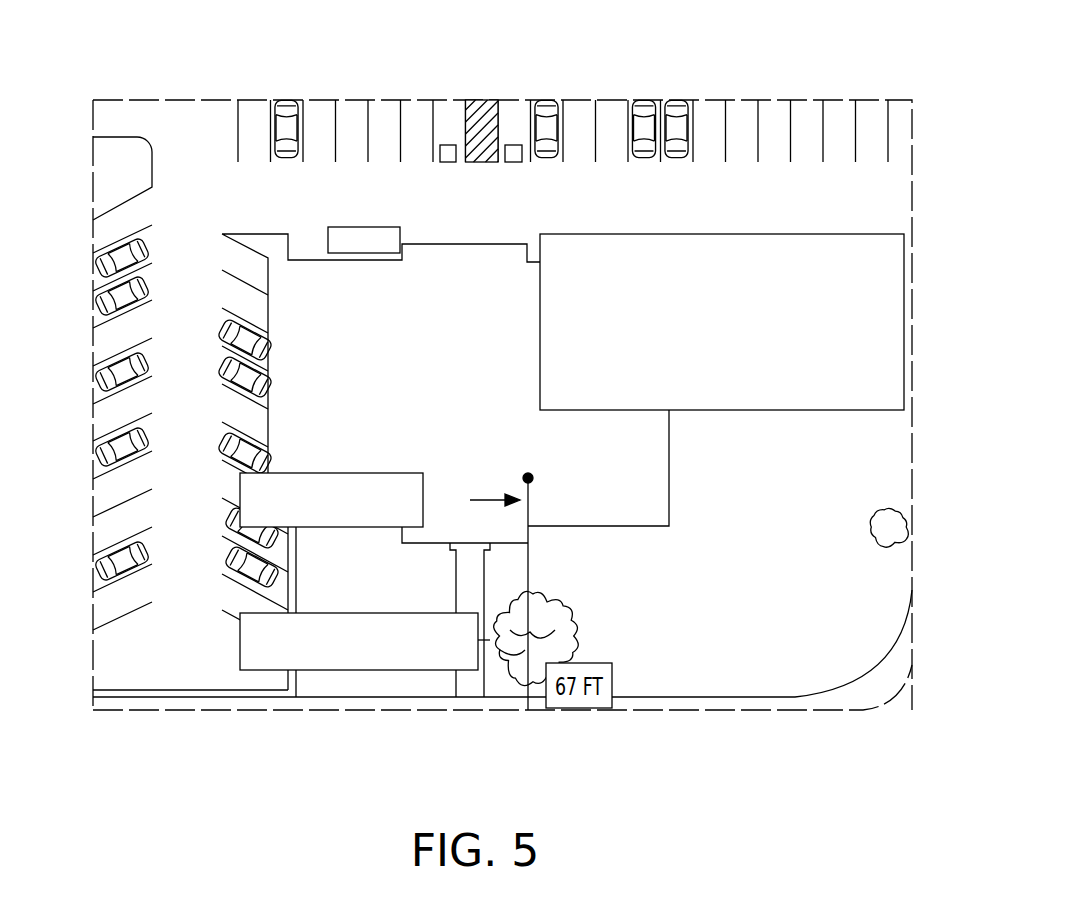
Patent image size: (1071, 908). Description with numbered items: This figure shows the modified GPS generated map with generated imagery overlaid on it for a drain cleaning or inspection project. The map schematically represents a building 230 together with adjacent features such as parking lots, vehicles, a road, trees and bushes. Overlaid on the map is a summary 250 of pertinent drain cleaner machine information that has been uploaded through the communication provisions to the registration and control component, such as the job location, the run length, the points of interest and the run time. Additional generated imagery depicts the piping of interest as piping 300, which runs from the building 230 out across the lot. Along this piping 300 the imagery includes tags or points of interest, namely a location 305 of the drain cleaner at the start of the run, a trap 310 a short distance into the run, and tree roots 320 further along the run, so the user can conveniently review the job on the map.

The building 230 is at (459, 244).
The summary 250 is at (668, 234).
The piping 300 is at (529, 569).
The location of the drain cleaner 305 is at (528, 478).
The trap 310 is at (300, 473).
The tree roots 320 is at (323, 670).